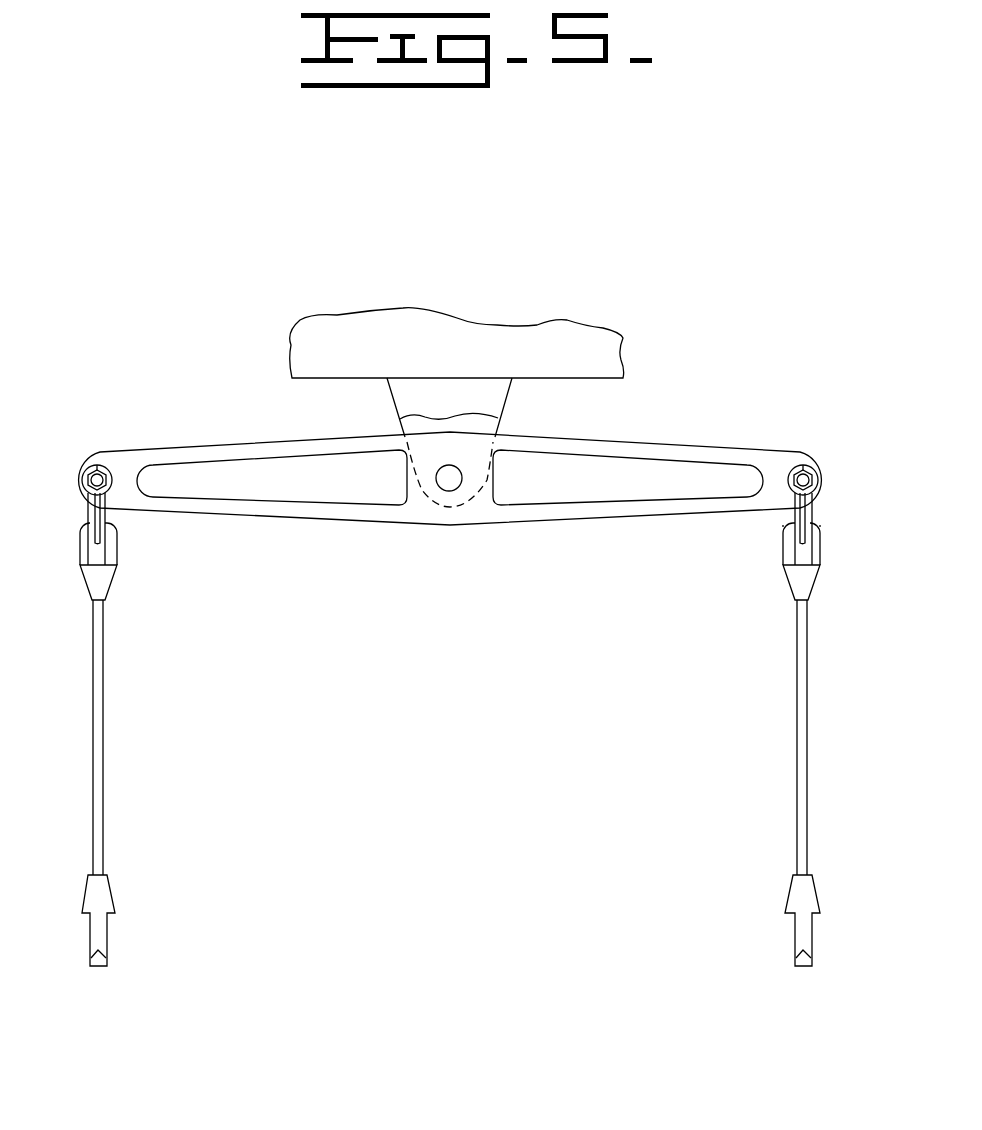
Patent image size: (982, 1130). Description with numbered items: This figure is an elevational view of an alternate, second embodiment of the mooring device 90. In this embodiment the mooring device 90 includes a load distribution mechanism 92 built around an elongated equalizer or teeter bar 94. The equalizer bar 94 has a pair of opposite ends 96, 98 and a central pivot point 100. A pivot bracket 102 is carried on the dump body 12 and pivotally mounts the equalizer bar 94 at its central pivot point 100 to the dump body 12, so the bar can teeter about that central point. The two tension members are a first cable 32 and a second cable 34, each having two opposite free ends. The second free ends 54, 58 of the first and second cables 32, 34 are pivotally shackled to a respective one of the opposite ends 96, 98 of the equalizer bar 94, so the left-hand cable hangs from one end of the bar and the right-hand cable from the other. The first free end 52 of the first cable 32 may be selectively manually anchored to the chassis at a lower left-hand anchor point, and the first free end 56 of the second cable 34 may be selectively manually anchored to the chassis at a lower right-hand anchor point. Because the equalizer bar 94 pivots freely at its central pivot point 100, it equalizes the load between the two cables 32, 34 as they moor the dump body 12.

The dump body 12 is at (427, 330).
The pivot bracket 102 is at (490, 378).
The load distribution mechanism 92 is at (260, 427).
The equalizer bar 94 is at (645, 440).
The first opposite end of equalizer bar 96 is at (120, 463).
The second opposite end of equalizer bar 98 is at (800, 455).
The central pivot point 100 is at (447, 482).
The second free end of first cable 54 is at (95, 580).
The second free end of second cable 58 is at (795, 573).
The first cable 32 is at (103, 723).
The second cable 34 is at (797, 707).
The first free end of first cable 52 is at (100, 940).
The first free end of second cable 56 is at (802, 928).
The mooring device 90 is at (828, 670).